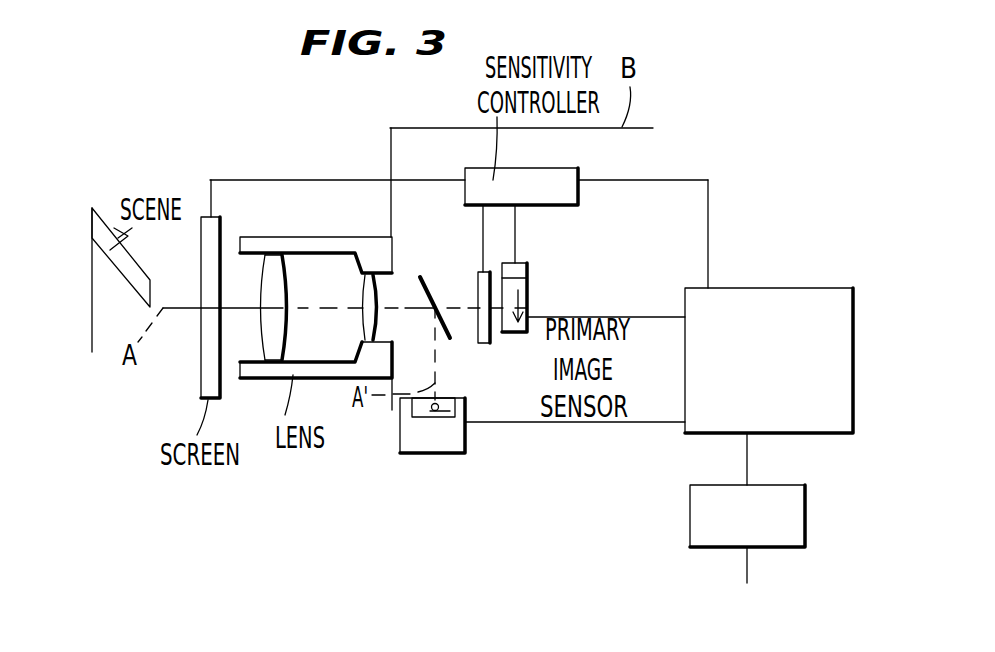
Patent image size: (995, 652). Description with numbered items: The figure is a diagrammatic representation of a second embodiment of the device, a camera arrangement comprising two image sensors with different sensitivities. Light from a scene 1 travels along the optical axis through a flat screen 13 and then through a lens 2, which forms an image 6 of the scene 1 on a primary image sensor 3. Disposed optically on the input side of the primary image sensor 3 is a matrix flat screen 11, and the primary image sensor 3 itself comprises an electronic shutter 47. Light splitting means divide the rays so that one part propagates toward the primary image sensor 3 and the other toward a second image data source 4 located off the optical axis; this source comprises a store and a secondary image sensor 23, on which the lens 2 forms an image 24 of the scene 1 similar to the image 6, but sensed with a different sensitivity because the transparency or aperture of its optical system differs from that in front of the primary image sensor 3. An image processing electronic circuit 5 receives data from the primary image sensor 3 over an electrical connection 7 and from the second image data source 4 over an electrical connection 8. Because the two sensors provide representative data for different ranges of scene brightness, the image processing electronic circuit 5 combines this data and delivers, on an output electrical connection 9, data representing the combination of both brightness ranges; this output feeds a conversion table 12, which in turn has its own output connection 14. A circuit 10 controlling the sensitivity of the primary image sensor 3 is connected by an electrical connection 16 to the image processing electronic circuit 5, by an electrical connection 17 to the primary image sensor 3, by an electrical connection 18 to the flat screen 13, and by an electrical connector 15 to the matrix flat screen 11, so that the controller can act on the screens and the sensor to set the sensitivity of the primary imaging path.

The scene 1 is at (100, 222).
The flat screen 13 is at (205, 385).
The lens 2 is at (283, 373).
The matrix flat screen 11 is at (480, 335).
The image 6 is at (538, 330).
The primary image sensor 3 is at (512, 333).
The electronic shutter 47 is at (523, 272).
The electrical connector 15 is at (482, 245).
The electrical connection 17 is at (515, 232).
The circuit controlling the sensitivity 10 is at (470, 172).
The electrical connection 18 is at (293, 178).
The electrical connection 16 is at (650, 180).
The image processing electronic circuit 5 is at (848, 388).
The electrical connection 7 is at (667, 320).
The electrical connection 8 is at (668, 430).
The output electrical connection 9 is at (748, 460).
The conversion table 12 is at (805, 518).
The output connection 14 is at (748, 567).
The second image data source 4 is at (433, 448).
The secondary image sensor 23 is at (432, 418).
The image 24 is at (438, 410).